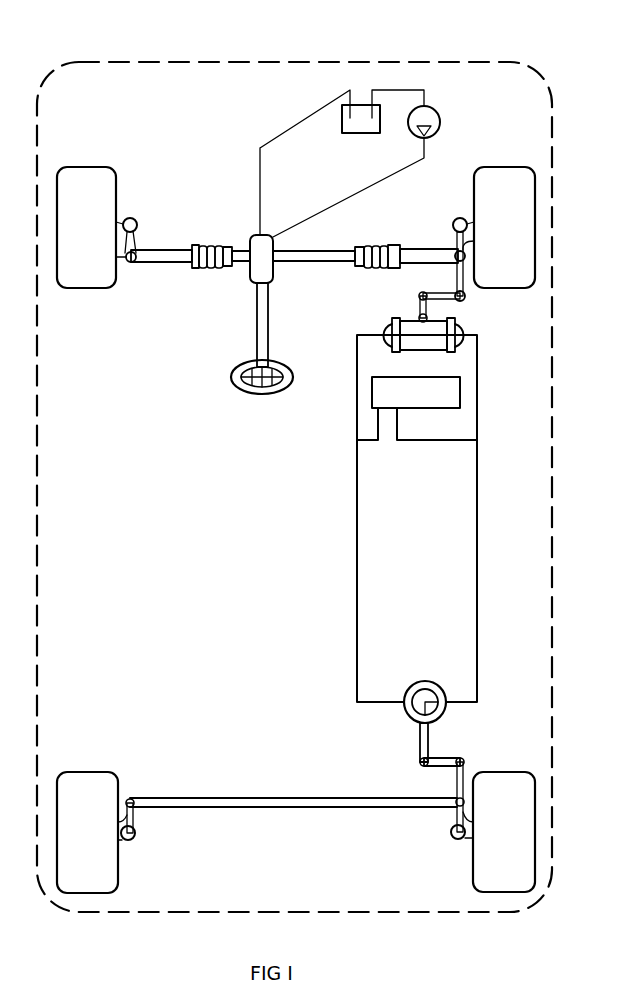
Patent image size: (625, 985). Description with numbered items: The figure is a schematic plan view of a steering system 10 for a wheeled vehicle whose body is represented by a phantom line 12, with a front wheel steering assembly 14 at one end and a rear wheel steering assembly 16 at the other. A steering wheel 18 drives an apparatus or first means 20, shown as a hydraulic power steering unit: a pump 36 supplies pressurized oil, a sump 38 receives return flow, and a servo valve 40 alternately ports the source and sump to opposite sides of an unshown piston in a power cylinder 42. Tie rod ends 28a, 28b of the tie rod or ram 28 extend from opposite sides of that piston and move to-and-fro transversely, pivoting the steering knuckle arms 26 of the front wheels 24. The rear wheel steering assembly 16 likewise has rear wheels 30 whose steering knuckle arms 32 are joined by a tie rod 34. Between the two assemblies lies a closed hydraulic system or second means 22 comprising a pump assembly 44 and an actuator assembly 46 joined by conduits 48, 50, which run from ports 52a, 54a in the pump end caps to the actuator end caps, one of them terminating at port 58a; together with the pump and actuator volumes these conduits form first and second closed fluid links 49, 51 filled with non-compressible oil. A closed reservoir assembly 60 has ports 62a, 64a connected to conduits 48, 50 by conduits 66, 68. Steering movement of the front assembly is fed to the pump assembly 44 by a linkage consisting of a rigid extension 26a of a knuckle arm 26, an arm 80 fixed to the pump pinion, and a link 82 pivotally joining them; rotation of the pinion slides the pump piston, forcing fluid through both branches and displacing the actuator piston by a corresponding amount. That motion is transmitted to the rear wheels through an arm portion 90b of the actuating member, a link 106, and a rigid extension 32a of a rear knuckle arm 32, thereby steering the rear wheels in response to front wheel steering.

The steering system 10 is at (179, 467).
The phantom line 12 is at (203, 62).
The front wheel steering assembly 14 is at (139, 161).
The rear wheel steering assembly 16 is at (155, 755).
The steering wheel 18 is at (247, 393).
The apparatus or first means 20 is at (218, 277).
The closed hydraulic system or second means 22 is at (325, 527).
The front wheels 24 is at (86, 167).
The steering knuckle arm 26 is at (135, 220).
The rigid extension 26a is at (466, 293).
The tie rod or ram 28 is at (196, 238).
The tie rod end 28a is at (163, 250).
The tie rod end 28b is at (425, 249).
The rear wheels 30 is at (78, 772).
The steering knuckle arm 32 is at (135, 833).
The rigid extension 32a is at (457, 782).
The tie rod 34 is at (257, 798).
The pump 36 is at (436, 112).
The sump 38 is at (350, 133).
The servo valve 40 is at (273, 240).
The power cylinder 42 is at (313, 262).
The pump assembly 44 is at (438, 353).
The actuator assembly 46 is at (410, 684).
The conduit or passage 48 is at (357, 530).
The first closed fluid flow branch or closed fluid link 49 is at (343, 577).
The conduit or passage 50 is at (477, 547).
The second closed fluid flow branch or closed fluid link 51 is at (489, 580).
The port 52a is at (386, 332).
The port 54a is at (469, 332).
The port 58a is at (428, 690).
The closed reservoir assembly 60 is at (416, 392).
The port 62a is at (378, 412).
The port 64a is at (392, 410).
The conduit or passage 66 is at (367, 440).
The conduit or passage 68 is at (448, 440).
The arm 80 is at (420, 307).
The link 82 is at (440, 293).
The arm portion 90b is at (420, 742).
The link 106 is at (445, 757).